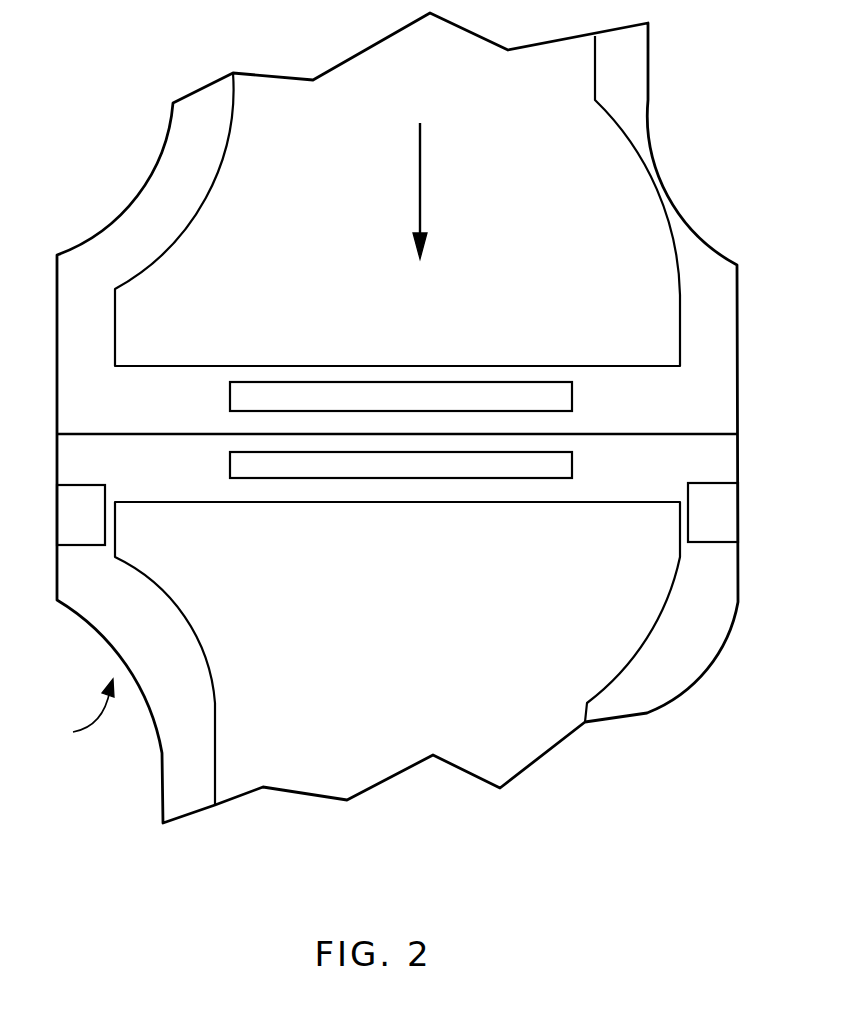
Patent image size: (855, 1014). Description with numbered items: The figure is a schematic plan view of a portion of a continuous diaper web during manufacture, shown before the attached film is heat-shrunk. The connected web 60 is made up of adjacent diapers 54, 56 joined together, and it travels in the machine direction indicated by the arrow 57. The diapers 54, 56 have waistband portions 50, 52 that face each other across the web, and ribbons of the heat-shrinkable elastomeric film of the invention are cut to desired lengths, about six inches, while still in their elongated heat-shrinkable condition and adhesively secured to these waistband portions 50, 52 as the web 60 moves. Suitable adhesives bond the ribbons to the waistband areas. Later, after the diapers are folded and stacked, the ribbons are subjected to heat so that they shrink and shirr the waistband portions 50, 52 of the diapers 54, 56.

The waistband portion 50 is at (723, 368).
The waistband portion 52 is at (730, 450).
The diaper 54 is at (648, 183).
The diaper 56 is at (175, 763).
The arrow 57 is at (423, 172).
The connected web 60 is at (77, 712).